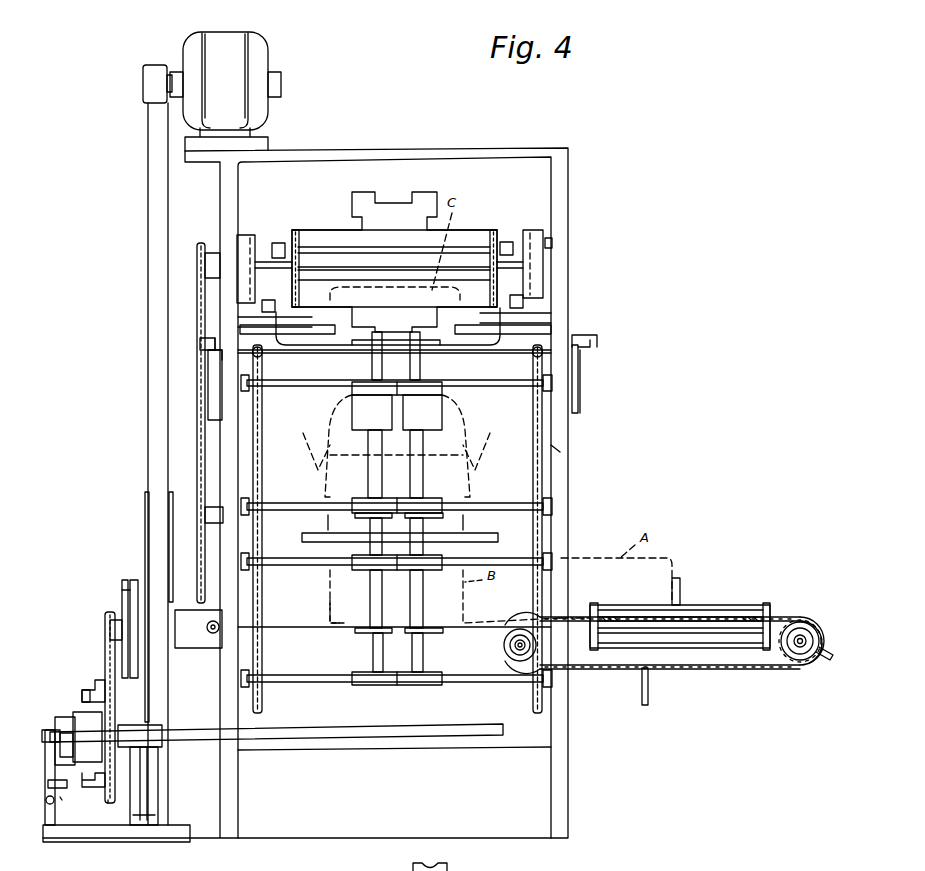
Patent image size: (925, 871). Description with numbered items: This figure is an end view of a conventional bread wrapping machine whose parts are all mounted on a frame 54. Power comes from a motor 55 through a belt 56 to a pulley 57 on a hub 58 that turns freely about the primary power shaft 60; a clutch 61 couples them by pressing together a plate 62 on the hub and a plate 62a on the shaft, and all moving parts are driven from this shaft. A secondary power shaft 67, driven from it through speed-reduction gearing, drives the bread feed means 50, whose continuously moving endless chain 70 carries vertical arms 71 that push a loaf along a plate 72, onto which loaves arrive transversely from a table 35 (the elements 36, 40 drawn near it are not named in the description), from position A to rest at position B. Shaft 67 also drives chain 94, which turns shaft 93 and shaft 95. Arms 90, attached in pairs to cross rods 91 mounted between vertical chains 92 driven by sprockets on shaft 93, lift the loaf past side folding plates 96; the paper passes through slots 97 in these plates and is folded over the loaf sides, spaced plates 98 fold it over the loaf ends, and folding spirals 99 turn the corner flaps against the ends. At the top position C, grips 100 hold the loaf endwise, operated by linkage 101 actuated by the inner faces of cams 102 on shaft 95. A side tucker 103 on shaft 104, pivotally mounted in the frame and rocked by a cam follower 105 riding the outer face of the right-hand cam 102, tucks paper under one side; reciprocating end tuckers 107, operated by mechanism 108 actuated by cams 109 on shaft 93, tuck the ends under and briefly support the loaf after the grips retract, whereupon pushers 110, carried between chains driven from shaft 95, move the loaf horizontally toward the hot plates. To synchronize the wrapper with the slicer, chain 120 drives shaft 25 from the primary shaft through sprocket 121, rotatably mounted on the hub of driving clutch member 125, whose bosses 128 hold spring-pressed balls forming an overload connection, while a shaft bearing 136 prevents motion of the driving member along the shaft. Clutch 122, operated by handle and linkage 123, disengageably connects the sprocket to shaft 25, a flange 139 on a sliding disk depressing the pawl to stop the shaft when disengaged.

The frame 54 is at (403, 146).
The motor 55 is at (225, 91).
The belt 56 is at (147, 190).
The pulley 57 is at (147, 492).
The shaft 104 is at (468, 250).
The pushers 110 is at (365, 200).
The side tucker 103 is at (280, 247).
The cams 102 is at (246, 240).
The cam follower 105 is at (556, 247).
The linkage 101 is at (525, 305).
The chain 94 is at (215, 320).
The grips 100 is at (325, 341).
The shaft 95 is at (211, 258).
The secondary power shaft 67 is at (212, 578).
The shaft 93 is at (205, 396).
The mechanism 108 is at (200, 343).
The cams 109 is at (210, 360).
The cross rods 91 is at (288, 390).
The end tuckers 107 is at (316, 354).
The vertical chains 92 is at (262, 460).
The side folding plates 96 is at (560, 452).
The arms 90 is at (410, 365).
The folding spirals 99 is at (312, 444).
The spaced plates 98 is at (326, 521).
The slots 97 is at (475, 535).
The plate 72 is at (344, 635).
The vertical arms 71 is at (500, 632).
The endless chain 70 is at (684, 669).
The bread feed means 50 is at (793, 596).
The rail 36 is at (632, 605).
The table 35 is at (695, 615).
The roller 40 is at (722, 626).
The hub 58 is at (194, 640).
The chain 120 is at (105, 640).
The clutch 61 is at (122, 577).
The plate 62 is at (133, 580).
The plate 62a is at (122, 590).
The primary power shaft 60 is at (116, 620).
The bosses 128 is at (92, 690).
The driving clutch member 125 is at (87, 737).
The flange 139 is at (62, 718).
The clutch 122 is at (89, 778).
The shaft 25 is at (400, 728).
The shaft bearing 136 is at (155, 790).
The sprocket 121 is at (108, 805).
The handle and linkage 123 is at (60, 797).